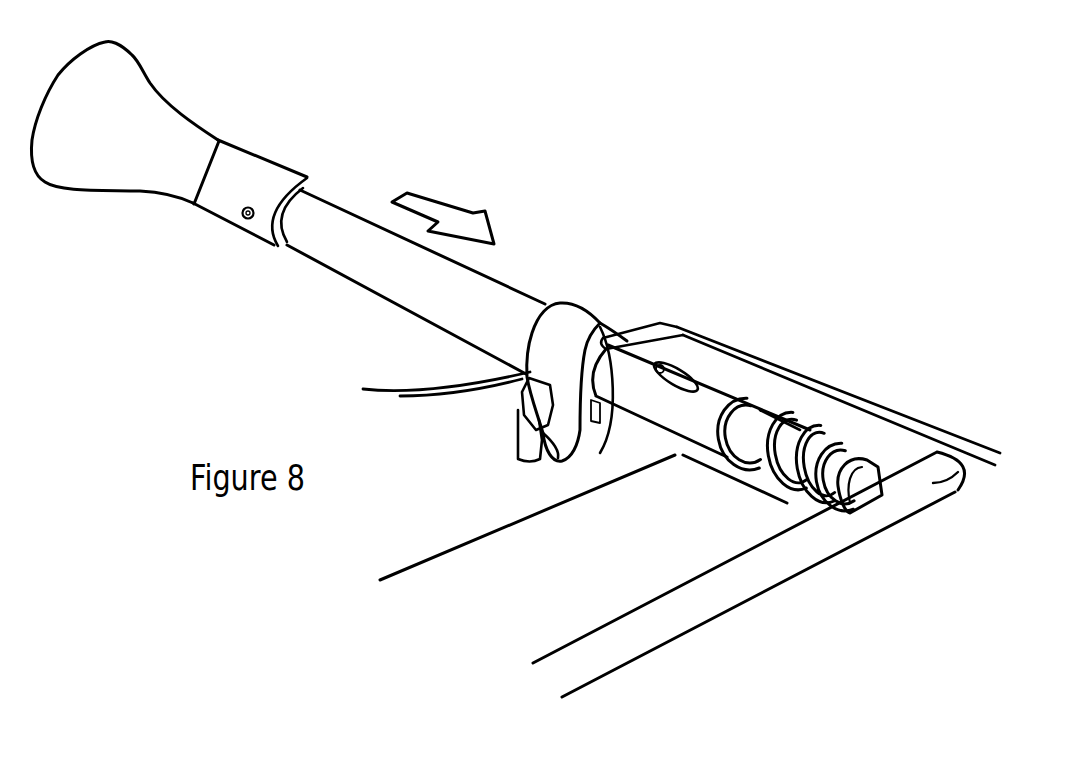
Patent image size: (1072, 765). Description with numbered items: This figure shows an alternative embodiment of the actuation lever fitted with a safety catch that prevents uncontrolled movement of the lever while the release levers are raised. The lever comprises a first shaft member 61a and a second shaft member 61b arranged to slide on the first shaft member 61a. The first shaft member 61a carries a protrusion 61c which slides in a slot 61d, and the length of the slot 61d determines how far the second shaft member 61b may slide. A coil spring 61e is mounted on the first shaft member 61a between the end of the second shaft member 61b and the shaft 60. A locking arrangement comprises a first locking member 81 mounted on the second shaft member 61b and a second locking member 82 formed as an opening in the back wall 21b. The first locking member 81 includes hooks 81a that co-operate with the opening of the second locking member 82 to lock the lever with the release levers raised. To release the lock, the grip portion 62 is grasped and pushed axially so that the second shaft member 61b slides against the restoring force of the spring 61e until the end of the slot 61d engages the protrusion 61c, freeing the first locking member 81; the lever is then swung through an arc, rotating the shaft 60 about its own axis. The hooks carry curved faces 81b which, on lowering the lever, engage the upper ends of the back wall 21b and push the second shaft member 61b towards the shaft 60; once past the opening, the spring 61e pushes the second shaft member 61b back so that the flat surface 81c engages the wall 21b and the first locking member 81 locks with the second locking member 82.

The grip portion 62 is at (157, 93).
The first locking member 81 is at (618, 283).
The second shaft member 61b is at (515, 300).
The flat surface 81c is at (528, 368).
The hooks 81a is at (540, 435).
The second locking member 82 is at (540, 384).
The curved faces 81b is at (552, 440).
The protrusion 61c is at (701, 372).
The back wall 21b is at (665, 344).
The slot 61d is at (690, 381).
The first shaft member 61a is at (782, 406).
The coil spring 61e is at (848, 450).
The shaft 60 is at (985, 466).